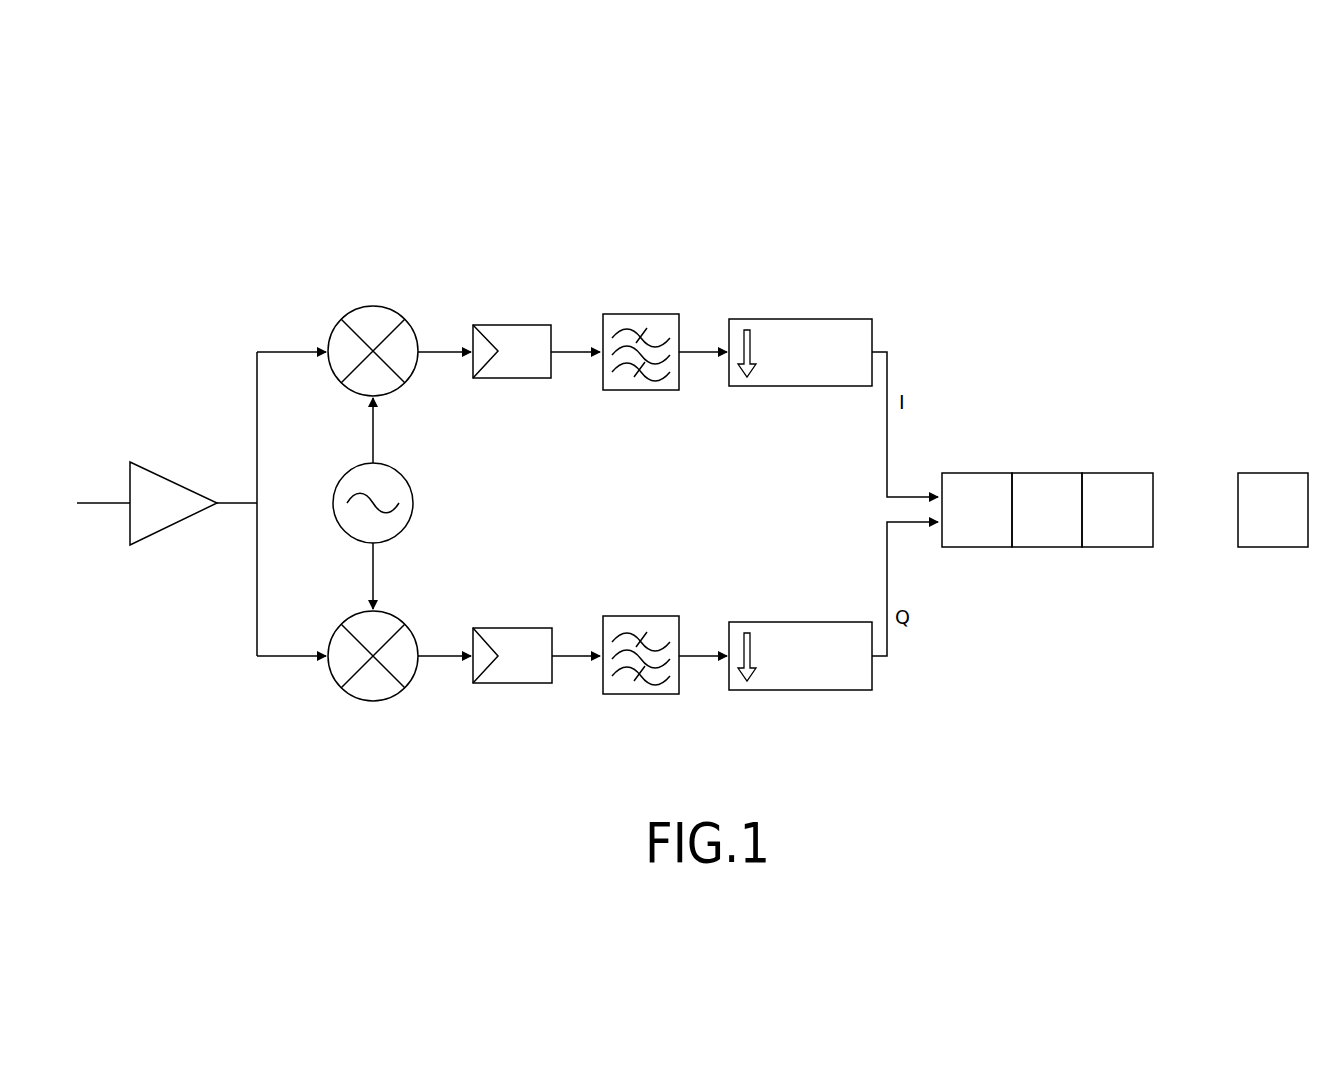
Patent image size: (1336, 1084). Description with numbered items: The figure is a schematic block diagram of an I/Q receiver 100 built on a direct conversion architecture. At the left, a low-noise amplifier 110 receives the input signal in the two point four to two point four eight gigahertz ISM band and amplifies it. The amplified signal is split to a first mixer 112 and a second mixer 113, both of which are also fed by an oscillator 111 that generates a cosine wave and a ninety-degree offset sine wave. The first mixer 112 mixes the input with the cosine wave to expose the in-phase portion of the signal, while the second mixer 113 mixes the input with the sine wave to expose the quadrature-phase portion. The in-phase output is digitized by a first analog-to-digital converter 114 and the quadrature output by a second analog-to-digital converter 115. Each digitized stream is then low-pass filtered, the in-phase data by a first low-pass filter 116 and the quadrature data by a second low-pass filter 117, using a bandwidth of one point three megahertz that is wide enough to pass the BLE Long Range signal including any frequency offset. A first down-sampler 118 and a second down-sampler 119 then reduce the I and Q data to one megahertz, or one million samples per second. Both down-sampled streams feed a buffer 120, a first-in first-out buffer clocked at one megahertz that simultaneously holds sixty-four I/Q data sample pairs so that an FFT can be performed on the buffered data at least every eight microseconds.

The I/Q receiver 100 is at (740, 210).
The low-noise amplifier 110 is at (157, 472).
The oscillator 111 is at (401, 472).
The first mixer 112 is at (400, 315).
The second mixer 113 is at (402, 619).
The first analog-to-digital converter 114 is at (507, 322).
The second analog-to-digital converter 115 is at (507, 625).
The first low-pass filter 116 is at (635, 312).
The second low-pass filter 117 is at (636, 614).
The first down-sampler 118 is at (795, 318).
The second down-sampler 119 is at (796, 621).
The buffer 120 is at (1134, 412).